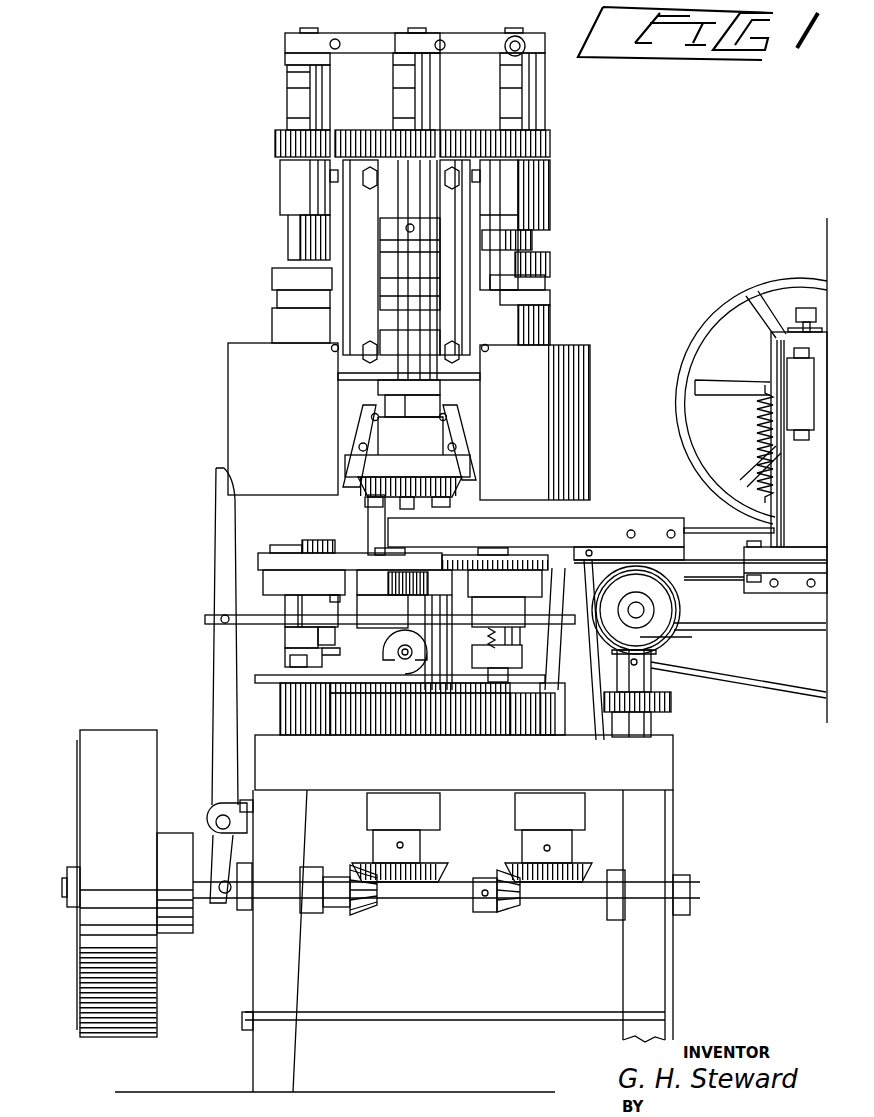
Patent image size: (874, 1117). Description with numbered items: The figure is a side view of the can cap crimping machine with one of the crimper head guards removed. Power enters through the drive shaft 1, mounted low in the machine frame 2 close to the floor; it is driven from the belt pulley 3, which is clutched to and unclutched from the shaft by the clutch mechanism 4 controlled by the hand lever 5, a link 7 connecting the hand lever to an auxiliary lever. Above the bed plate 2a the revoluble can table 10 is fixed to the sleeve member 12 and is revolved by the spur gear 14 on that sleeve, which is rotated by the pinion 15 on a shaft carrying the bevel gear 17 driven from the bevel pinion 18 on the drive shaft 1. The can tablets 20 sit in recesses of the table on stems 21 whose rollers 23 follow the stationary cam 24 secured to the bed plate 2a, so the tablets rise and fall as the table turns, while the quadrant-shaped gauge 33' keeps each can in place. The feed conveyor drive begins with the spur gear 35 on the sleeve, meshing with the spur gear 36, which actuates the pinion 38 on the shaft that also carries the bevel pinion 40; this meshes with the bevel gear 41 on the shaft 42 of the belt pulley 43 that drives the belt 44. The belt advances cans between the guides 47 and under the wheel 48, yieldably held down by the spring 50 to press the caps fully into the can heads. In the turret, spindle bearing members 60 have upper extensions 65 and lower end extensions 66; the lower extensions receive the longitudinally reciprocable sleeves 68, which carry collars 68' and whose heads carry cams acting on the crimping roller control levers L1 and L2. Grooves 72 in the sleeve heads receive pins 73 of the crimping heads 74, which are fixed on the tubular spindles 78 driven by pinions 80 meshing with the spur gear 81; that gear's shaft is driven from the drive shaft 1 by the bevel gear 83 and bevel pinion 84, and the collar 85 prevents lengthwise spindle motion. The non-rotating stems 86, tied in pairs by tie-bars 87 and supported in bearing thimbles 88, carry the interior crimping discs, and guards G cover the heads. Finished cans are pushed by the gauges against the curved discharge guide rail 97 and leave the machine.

The drive shaft 1 is at (440, 912).
The machine frame 2 is at (673, 832).
The bed plate 2a is at (673, 778).
The belt pulley 3 is at (160, 730).
The clutch mechanism 4 is at (205, 850).
The hand lever 5 is at (213, 640).
The link 7 is at (250, 617).
The revoluble can table 10 is at (258, 560).
The sleeve member 12 is at (368, 517).
The spur gear 14 is at (280, 712).
The pinion 15 is at (548, 718).
The bevel gear 17 is at (583, 870).
The bevel pinion 18 is at (505, 914).
The can tablet 20 is at (290, 545).
The stem 21 is at (525, 636).
The roller 23 is at (290, 661).
The stationary cam 24 is at (334, 655).
The gauge 33' is at (315, 524).
The spur gear 35 is at (285, 686).
The spur gear 36 is at (548, 702).
The pinion 38 is at (658, 697).
The bevel pinion 40 is at (656, 656).
The bevel gear 41 is at (680, 610).
The shaft 42 is at (636, 602).
The belt pulley 43 is at (692, 637).
The belt 44 is at (795, 688).
The guides 47 is at (727, 530).
The wheel 48 is at (800, 282).
The spring 50 is at (758, 421).
The spindle bearing member 60 is at (497, 206).
The upper extension 65 is at (550, 212).
The lower end extension 66 is at (552, 330).
The longitudinally reciprocable sleeve 68 is at (404, 289).
The collar 68' is at (560, 264).
The groove 72 is at (400, 390).
The pin 73 is at (405, 412).
The crimping head 74 is at (360, 463).
The tubular spindle 78 is at (298, 240).
The pinion 80 is at (275, 147).
The spur gear 81 is at (470, 140).
The bevel gear 83 is at (440, 870).
The bevel pinion 84 is at (358, 915).
The collar 85 is at (532, 238).
The stem 86 is at (310, 33).
The tie-bar 87 is at (390, 40).
The bearing thimble 88 is at (285, 60).
The curved discharge guide rail 97 is at (528, 527).
The guard G is at (228, 366).
The crimping roller control lever L1 is at (360, 430).
The crimping roller control lever L2 is at (460, 436).